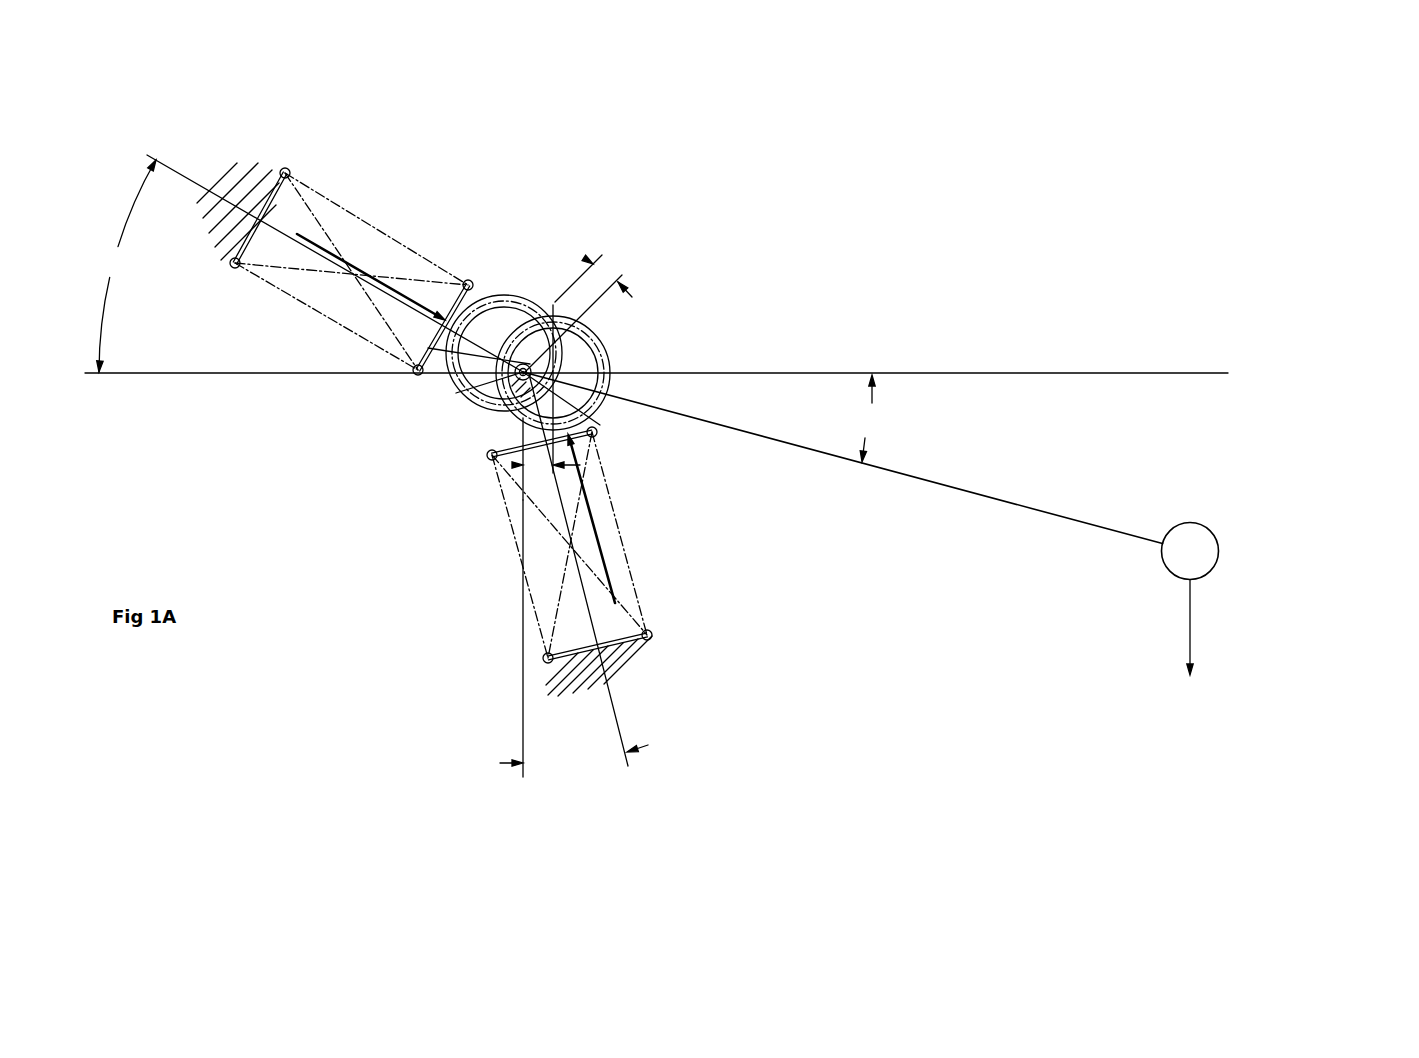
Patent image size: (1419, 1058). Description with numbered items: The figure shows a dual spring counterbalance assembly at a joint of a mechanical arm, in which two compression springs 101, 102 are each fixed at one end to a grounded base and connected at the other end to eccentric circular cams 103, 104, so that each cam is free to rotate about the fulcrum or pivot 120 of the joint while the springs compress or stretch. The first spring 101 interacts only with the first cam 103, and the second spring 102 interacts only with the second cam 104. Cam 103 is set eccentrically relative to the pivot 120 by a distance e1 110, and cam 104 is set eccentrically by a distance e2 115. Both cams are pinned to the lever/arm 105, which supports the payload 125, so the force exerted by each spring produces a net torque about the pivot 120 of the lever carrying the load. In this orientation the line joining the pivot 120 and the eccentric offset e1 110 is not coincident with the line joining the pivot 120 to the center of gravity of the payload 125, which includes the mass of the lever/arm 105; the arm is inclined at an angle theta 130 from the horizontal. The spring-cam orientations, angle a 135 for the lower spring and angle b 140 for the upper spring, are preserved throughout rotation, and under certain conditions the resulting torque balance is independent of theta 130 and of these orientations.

The compression spring 101 is at (658, 649).
The compression spring 102 is at (296, 172).
The eccentric circular cam 103 is at (615, 390).
The eccentric circular cam 104 is at (452, 395).
The lever/arm 105 is at (843, 458).
The eccentric distance e1 110 is at (520, 465).
The eccentric distance e2 115 is at (556, 307).
The pivot 120 is at (538, 369).
The payload 125 is at (1265, 604).
The angle theta 130 is at (858, 418).
The spring-cam orientation a 135 is at (574, 575).
The spring-cam orientation b 140 is at (300, 263).